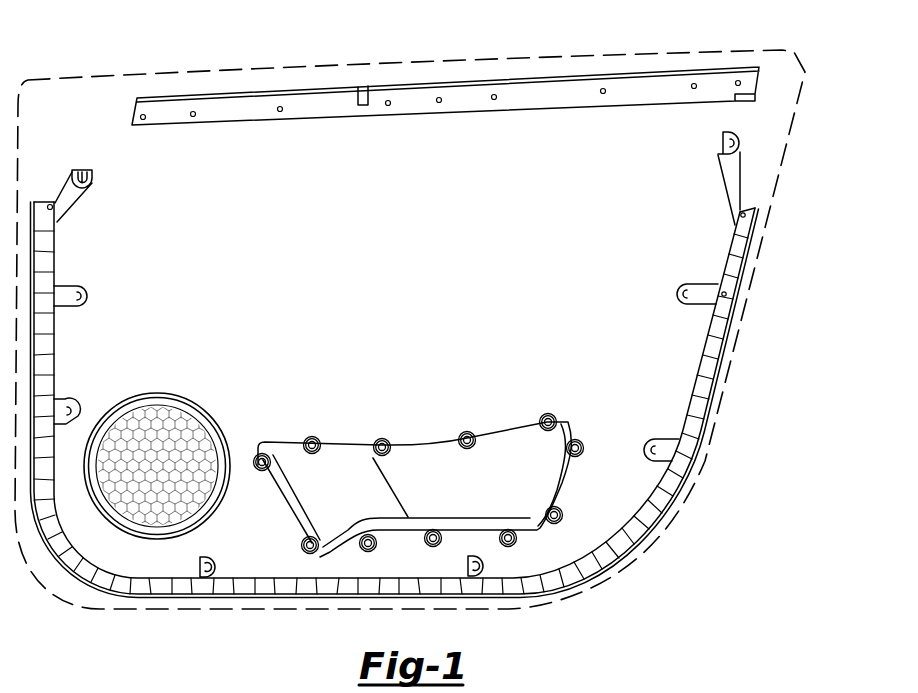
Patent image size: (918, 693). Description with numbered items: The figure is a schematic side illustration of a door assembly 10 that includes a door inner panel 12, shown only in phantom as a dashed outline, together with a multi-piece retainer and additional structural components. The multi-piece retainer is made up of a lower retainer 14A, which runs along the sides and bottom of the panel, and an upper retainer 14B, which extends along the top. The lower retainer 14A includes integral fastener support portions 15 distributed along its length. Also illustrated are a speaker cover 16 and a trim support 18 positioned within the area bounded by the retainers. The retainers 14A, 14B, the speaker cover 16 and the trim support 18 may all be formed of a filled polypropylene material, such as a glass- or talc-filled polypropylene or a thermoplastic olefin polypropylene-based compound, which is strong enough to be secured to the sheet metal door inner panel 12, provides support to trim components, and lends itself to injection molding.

The door assembly 10 is at (114, 36).
The door inner panel 12 is at (203, 78).
The lower retainer 14A is at (586, 560).
The upper retainer 14B is at (546, 93).
The fastener support portions 15 is at (92, 180).
The speaker cover 16 is at (182, 421).
The trim support 18 is at (527, 495).